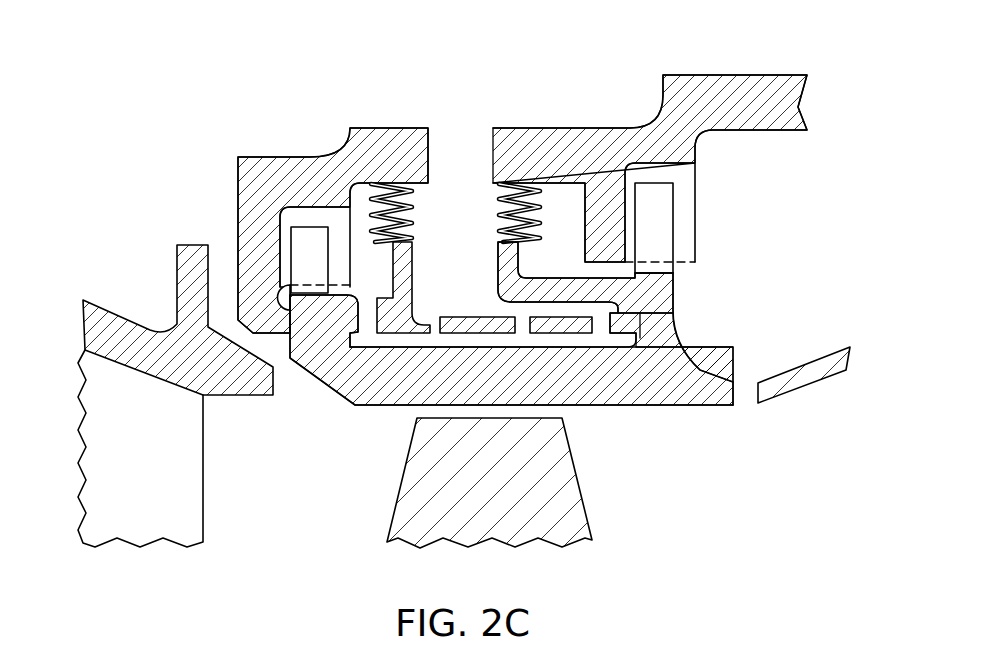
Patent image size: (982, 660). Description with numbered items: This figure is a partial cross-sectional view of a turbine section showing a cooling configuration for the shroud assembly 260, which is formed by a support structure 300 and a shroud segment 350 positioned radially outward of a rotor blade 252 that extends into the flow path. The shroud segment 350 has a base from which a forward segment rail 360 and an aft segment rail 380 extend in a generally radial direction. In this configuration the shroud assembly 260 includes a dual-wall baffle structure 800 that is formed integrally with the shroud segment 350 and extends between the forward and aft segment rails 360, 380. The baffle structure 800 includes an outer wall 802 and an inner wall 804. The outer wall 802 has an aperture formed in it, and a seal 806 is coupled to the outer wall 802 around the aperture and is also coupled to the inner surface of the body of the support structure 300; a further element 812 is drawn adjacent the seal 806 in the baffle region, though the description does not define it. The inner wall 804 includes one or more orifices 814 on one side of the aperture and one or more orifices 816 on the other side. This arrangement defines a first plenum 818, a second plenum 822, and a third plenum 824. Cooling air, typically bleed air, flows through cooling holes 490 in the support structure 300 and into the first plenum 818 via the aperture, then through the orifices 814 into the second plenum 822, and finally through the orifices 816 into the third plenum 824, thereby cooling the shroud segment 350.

The rotor blade 252 is at (575, 482).
The shroud assembly 260 is at (752, 413).
The support structure 300 is at (598, 104).
The shroud segment 350 is at (325, 404).
The forward segment rail 360 is at (284, 345).
The aft segment rail 380 is at (682, 309).
The cooling holes 490 is at (462, 138).
The dual-wall baffle structure 800 is at (528, 149).
The outer wall 802 is at (540, 266).
The inner wall 804 is at (444, 343).
The seal 806 is at (497, 205).
The seal segment 812 is at (413, 285).
The orifices 814 is at (433, 327).
The orifices 816 is at (368, 327).
The first plenum 818 is at (479, 277).
The second plenum 822 is at (570, 338).
The third plenum 824 is at (368, 257).